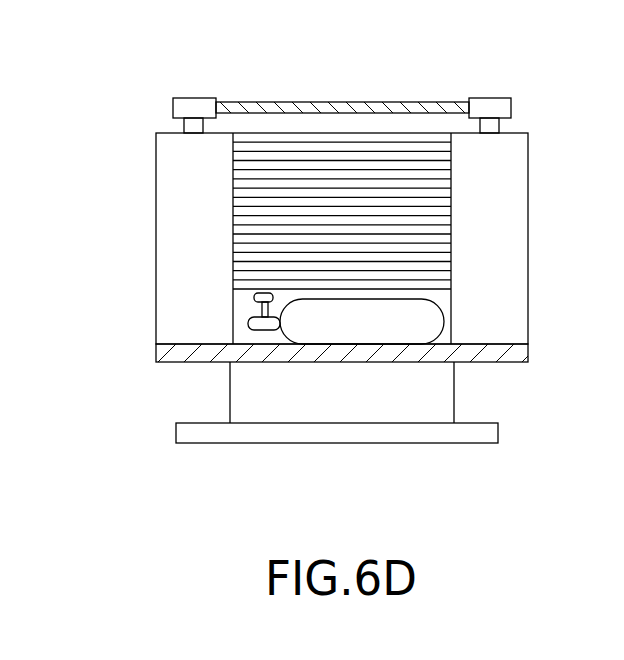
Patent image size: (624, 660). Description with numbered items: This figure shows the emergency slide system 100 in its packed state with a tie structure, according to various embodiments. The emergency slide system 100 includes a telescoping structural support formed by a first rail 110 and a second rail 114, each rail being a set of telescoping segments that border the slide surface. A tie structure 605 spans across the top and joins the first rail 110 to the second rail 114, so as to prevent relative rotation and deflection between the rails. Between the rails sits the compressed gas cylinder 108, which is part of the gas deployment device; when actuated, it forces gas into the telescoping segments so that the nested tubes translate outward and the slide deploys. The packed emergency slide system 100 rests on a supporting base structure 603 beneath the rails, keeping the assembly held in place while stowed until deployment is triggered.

The emergency slide system 100 is at (155, 255).
The first rail 110 is at (178, 298).
The second rail 114 is at (510, 220).
The tie structure 605 is at (343, 102).
The compressed gas cylinder 108 is at (302, 327).
The base support 603 is at (433, 393).